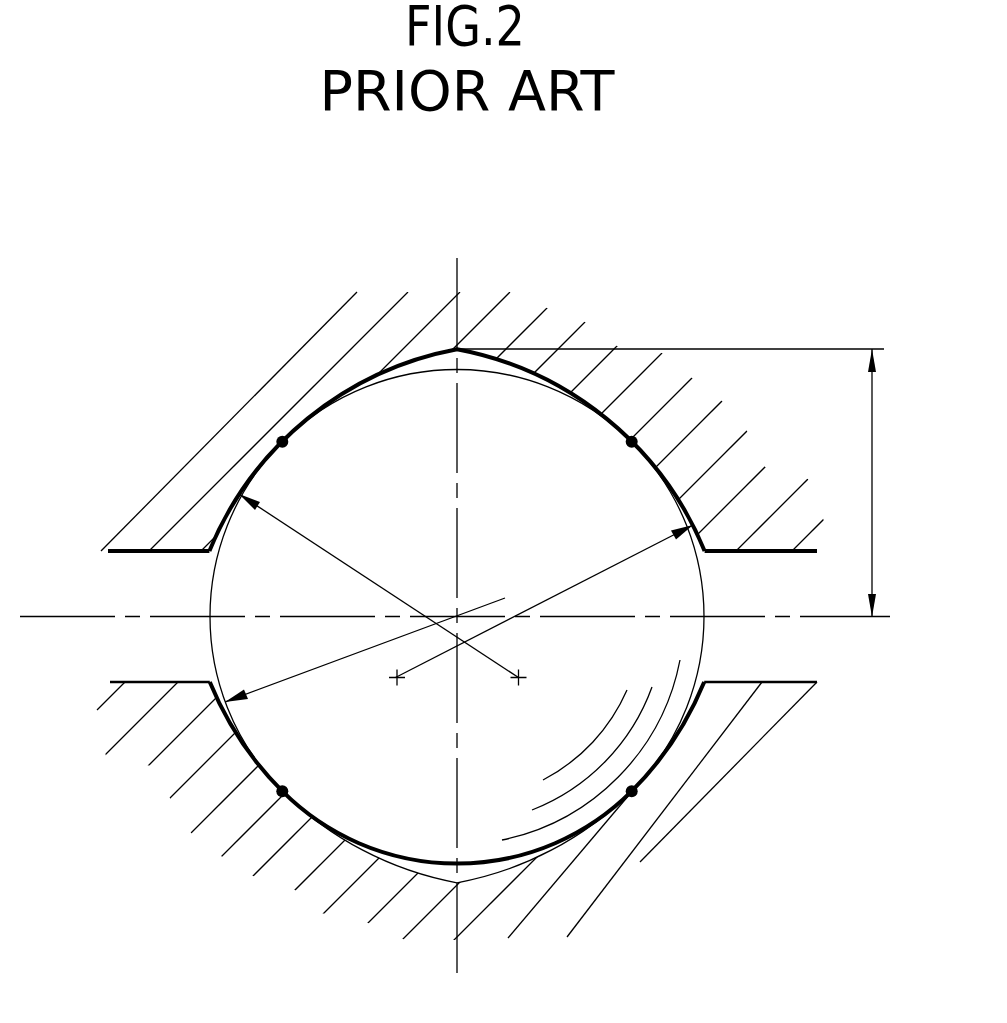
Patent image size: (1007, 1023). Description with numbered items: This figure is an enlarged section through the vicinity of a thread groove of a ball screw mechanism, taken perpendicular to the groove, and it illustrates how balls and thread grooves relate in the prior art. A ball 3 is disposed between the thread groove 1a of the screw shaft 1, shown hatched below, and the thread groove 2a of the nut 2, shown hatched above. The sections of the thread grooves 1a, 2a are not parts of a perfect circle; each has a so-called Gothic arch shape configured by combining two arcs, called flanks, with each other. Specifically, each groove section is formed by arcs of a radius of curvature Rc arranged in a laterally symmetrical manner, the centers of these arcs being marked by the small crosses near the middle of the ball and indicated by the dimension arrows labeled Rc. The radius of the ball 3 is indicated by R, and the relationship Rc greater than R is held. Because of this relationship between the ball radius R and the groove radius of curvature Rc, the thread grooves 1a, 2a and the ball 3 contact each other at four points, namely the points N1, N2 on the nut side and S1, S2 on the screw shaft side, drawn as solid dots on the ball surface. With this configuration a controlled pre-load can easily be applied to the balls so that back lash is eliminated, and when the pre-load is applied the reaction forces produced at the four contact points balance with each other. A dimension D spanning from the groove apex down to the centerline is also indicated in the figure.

The screw shaft 1 is at (408, 798).
The thread groove 1a is at (395, 864).
The nut 2 is at (548, 448).
The thread groove 2a is at (517, 363).
The ball 3 is at (697, 653).
The contact point N1 is at (283, 436).
The contact point N2 is at (637, 441).
The contact point S1 is at (283, 797).
The contact point S2 is at (634, 797).
The radius of the ball R is at (365, 650).
The radius of curvature Rc is at (466, 590).
The groove depth / dimension D is at (672, 483).